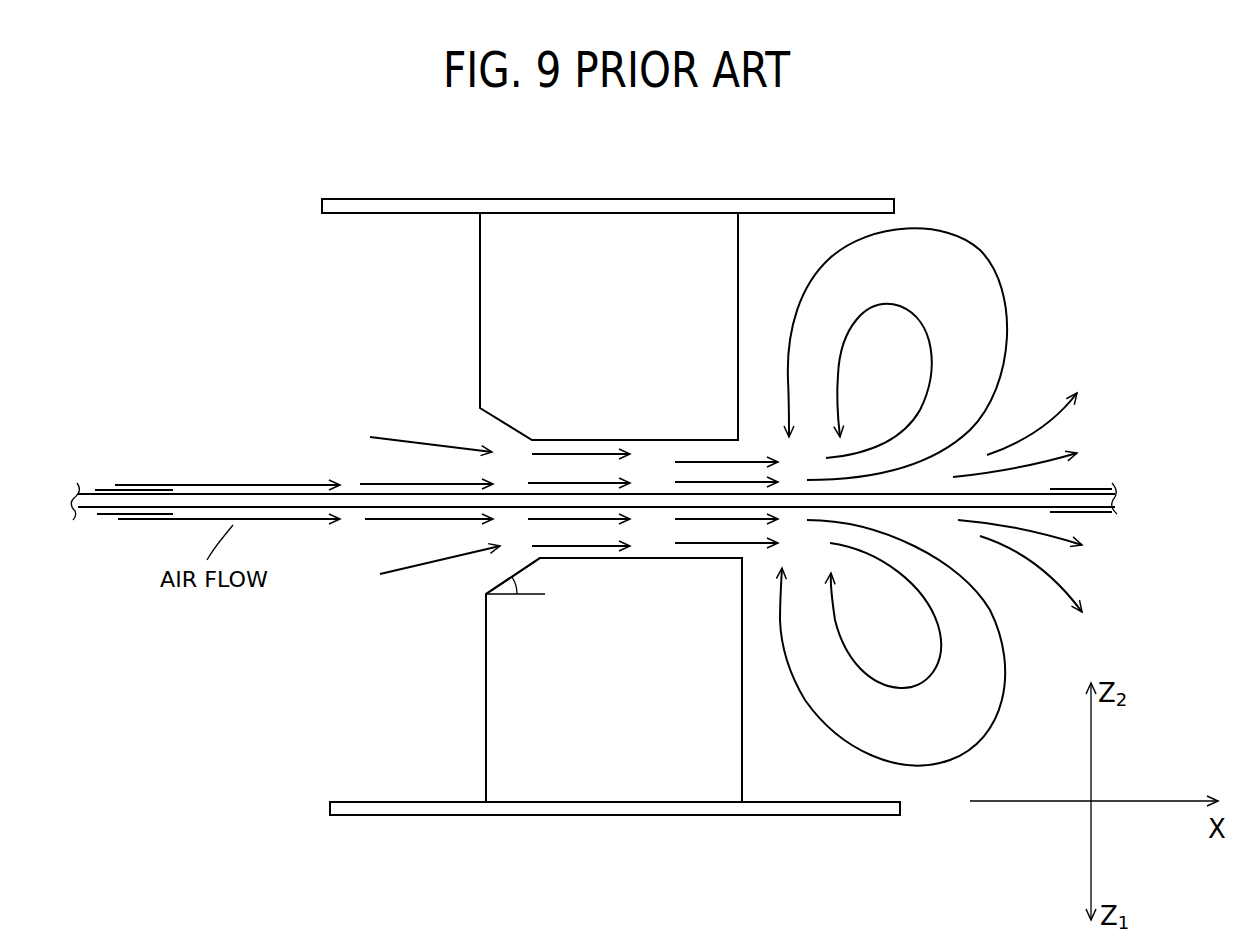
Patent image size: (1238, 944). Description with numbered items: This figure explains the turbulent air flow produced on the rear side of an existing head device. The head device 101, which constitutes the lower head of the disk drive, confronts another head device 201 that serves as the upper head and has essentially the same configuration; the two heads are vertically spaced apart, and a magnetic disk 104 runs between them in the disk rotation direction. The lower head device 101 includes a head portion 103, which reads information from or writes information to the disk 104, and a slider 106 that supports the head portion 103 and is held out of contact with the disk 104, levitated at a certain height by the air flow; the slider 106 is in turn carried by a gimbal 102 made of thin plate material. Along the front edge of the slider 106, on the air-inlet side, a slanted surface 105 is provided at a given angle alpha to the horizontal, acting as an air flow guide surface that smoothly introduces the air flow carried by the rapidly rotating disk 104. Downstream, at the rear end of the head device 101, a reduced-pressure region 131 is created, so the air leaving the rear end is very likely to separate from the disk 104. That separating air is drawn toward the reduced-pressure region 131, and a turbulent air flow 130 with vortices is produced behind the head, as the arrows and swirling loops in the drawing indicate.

The head device 101 is at (478, 690).
The head device 201 is at (478, 307).
The gimbal 102 is at (665, 815).
The head portion 103 is at (666, 558).
The magnetic disk 104 is at (205, 500).
The slanted surface 105 is at (497, 588).
The slider 106 is at (525, 788).
The turbulent air flow 130 is at (1005, 657).
The reduced-pressure region 131 is at (810, 248).